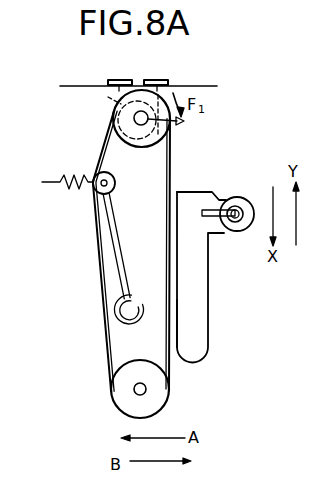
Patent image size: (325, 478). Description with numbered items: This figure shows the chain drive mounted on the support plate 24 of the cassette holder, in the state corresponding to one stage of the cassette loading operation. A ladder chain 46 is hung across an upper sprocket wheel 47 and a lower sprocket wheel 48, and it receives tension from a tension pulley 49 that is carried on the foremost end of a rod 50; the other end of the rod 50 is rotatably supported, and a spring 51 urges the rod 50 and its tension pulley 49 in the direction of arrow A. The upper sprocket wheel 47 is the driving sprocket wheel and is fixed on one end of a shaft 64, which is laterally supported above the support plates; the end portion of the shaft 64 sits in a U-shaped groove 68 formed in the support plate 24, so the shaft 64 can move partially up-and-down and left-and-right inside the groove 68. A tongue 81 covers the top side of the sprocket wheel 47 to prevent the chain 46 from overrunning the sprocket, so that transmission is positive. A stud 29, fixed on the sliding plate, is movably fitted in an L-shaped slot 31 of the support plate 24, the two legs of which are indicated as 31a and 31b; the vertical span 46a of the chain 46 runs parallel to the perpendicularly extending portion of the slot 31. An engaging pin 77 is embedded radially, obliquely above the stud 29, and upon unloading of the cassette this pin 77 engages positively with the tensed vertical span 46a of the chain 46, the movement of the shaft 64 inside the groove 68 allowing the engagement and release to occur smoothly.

The support plate 24 is at (66, 86).
The U-shaped groove 68 is at (108, 97).
The tongue 81 is at (156, 80).
The sprocket wheel 47 is at (116, 109).
The shaft 64 is at (171, 125).
The spring 51 is at (66, 180).
The tension pulley 49 is at (116, 183).
The rod 50 is at (112, 224).
The ladder chain 46 is at (97, 318).
The vertical span 46a is at (166, 270).
The sprocket wheel 48 is at (114, 392).
The engaging pin 77 is at (203, 193).
The roller flange 31a is at (250, 199).
The stud 29 is at (237, 231).
The L-shaped slot 31 is at (209, 280).
The bracket arm 31b is at (198, 311).